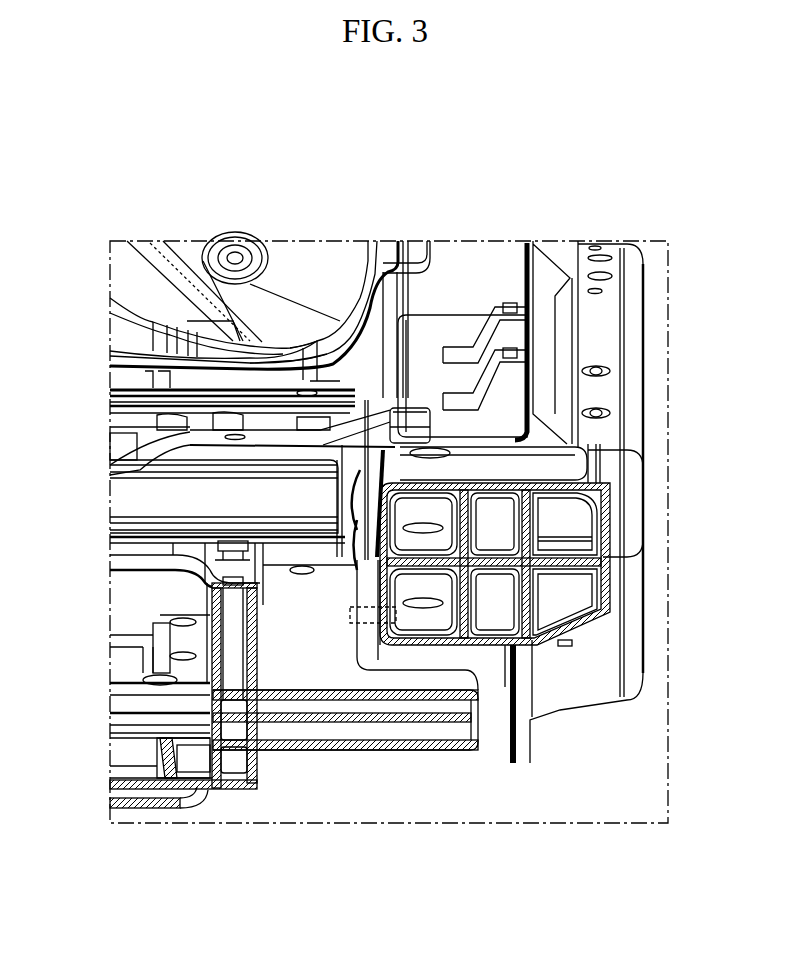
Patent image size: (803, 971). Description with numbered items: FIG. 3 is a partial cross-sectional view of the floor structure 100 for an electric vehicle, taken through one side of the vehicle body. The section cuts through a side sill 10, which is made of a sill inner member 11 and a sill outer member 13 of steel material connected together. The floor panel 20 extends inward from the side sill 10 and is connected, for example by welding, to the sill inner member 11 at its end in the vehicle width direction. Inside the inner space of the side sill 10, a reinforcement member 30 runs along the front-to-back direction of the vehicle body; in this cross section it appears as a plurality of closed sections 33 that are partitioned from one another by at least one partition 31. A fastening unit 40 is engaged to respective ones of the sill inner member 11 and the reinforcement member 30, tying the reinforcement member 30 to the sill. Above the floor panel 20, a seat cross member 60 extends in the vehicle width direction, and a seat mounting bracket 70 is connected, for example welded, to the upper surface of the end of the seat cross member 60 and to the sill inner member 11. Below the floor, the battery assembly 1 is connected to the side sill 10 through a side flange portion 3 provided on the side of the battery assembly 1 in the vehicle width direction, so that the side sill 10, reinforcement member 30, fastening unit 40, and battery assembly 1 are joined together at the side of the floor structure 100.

The floor structure 100 is at (375, 176).
The battery assembly 1 is at (100, 707).
The side flange portion 3 is at (392, 750).
The side sill 10 is at (650, 496).
The sill inner member 11 is at (357, 640).
The sill outer member 13 is at (643, 585).
The floor panel 20 is at (322, 545).
The reinforcement member 30 is at (548, 649).
The partition 31 is at (527, 600).
The closed section 33 is at (437, 622).
The fastening unit 40 is at (522, 458).
The seat cross member 60 is at (167, 498).
The seat mounting bracket 70 is at (201, 450).